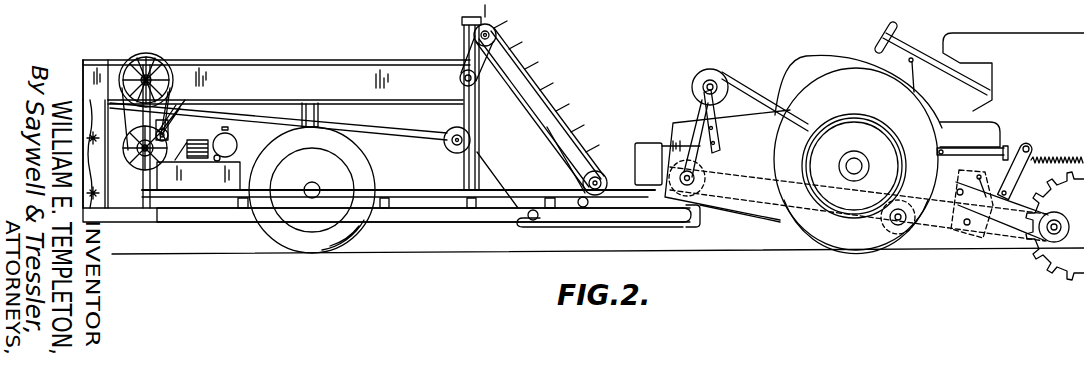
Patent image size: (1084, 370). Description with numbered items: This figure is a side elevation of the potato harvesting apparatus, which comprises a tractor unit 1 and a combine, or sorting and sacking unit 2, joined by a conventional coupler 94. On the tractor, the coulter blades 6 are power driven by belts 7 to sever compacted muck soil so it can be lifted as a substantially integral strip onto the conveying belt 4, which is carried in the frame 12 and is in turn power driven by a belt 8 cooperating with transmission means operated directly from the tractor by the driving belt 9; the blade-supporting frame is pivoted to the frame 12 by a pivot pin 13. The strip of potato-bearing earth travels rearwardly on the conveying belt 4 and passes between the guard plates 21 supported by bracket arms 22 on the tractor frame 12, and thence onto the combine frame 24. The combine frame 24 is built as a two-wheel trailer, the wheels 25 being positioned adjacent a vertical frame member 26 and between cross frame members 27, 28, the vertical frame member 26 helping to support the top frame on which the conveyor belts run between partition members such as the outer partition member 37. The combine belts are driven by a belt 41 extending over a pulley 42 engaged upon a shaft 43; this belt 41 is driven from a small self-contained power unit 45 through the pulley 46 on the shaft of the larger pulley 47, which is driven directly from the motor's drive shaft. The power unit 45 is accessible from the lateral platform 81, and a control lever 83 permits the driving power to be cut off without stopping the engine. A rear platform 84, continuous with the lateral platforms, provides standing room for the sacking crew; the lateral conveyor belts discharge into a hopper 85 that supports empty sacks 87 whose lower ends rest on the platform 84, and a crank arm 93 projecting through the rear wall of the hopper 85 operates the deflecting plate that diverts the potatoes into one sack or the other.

The tractor unit 1 is at (1062, 21).
The combine unit 2 is at (415, 42).
The conveying belt 4 is at (755, 160).
The coulter blades 6 is at (1043, 249).
The belts 7 is at (1000, 238).
The belt 8 is at (700, 110).
The driving belt 9 is at (758, 86).
The frame 12 is at (942, 194).
The pivot pin 13 is at (962, 170).
The guard plates 21 is at (643, 163).
The bracket arms 22 is at (670, 151).
The combine frame 24 is at (472, 216).
The wheels 25 is at (348, 237).
The vertical frame member 26 is at (318, 102).
The cross frame member 27 is at (239, 209).
The cross frame member 28 is at (393, 209).
The partition member 37 is at (290, 62).
The belt 41 is at (150, 79).
The pulley 42 is at (152, 60).
The shaft 43 is at (154, 104).
The power unit 45 is at (217, 182).
The pulley 46 is at (162, 152).
The larger pulley 47 is at (147, 172).
The lateral platform 81 is at (437, 192).
The control lever 83 is at (171, 108).
The rear platform 84 is at (107, 218).
The hopper 85 is at (96, 62).
The sacks 87 is at (96, 113).
The crank arm 93 is at (84, 97).
The coupler 94 is at (695, 214).